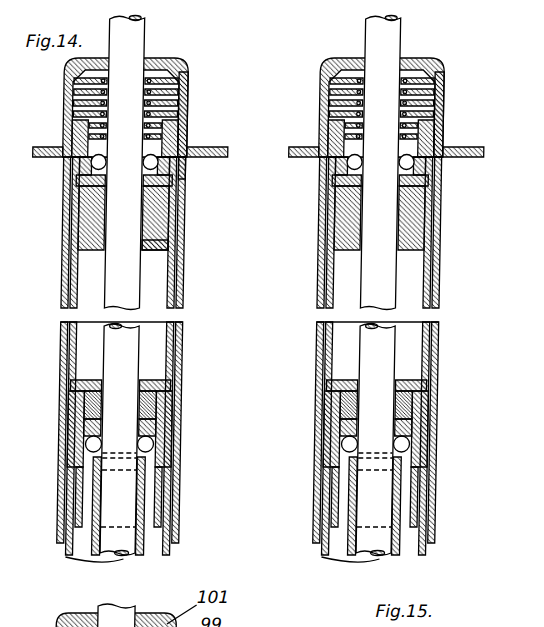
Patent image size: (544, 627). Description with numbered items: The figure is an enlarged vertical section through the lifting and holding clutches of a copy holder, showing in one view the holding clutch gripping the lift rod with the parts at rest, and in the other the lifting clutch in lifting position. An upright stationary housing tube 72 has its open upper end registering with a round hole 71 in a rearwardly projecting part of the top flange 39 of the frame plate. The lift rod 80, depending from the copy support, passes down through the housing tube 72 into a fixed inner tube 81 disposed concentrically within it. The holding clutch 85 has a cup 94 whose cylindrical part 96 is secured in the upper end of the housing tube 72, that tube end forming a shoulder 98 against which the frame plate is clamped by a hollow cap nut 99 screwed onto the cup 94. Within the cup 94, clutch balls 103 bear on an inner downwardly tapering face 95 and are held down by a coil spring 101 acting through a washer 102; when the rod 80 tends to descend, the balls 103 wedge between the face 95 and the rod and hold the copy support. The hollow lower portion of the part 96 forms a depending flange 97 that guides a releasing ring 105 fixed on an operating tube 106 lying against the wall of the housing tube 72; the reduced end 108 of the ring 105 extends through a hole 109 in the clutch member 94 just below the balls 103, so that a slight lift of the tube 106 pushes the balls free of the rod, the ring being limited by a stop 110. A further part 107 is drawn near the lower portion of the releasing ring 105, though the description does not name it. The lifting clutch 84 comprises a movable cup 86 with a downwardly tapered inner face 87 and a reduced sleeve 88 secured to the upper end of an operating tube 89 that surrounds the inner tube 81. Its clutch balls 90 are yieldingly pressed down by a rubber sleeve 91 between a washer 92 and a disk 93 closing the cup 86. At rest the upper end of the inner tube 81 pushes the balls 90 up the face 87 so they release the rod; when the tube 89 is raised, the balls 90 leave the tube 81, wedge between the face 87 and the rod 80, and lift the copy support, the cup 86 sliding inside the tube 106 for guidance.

In FIG. 14, the top flange 39 is at (118, 139).
In FIG. 15, the top flange 39 is at (377, 134).
In FIG. 14, the round hole 71 is at (62, 128).
In FIG. 15, the round hole 71 is at (313, 120).
In FIG. 14, the housing tube 72 is at (64, 463).
In FIG. 15, the housing tube 72 is at (455, 232).
In FIG. 14, the lift rod 80 is at (122, 286).
In FIG. 15, the lift rod 80 is at (378, 286).
In FIG. 14, the inner tube 81 is at (125, 567).
In FIG. 15, the inner tube 81 is at (348, 589).
In FIG. 14, the lifting clutch 84 is at (57, 453).
In FIG. 14, the holding clutch 85 is at (56, 218).
In FIG. 14, the cup 86 is at (177, 420).
In FIG. 15, the cup 86 is at (432, 429).
In FIG. 14, the tapered inner face 87 is at (57, 430).
In FIG. 15, the tapered inner face 87 is at (314, 431).
In FIG. 14, the reduced sleeve 88 is at (90, 501).
In FIG. 15, the reduced sleeve 88 is at (345, 497).
In FIG. 14, the operating member 89 is at (81, 517).
In FIG. 15, the operating member 89 is at (335, 520).
In FIG. 14, the clutch balls 90 is at (34, 443).
In FIG. 15, the clutch balls 90 is at (350, 438).
In FIG. 14, the rubber sleeve 91 is at (180, 399).
In FIG. 15, the rubber sleeve 91 is at (342, 386).
In FIG. 14, the washer 92 is at (61, 405).
In FIG. 15, the washer 92 is at (433, 421).
In FIG. 14, the disk 93 is at (96, 376).
In FIG. 15, the disk 93 is at (410, 387).
In FIG. 14, the cup 94 is at (198, 138).
In FIG. 15, the cup 94 is at (447, 170).
In FIG. 14, the tapering face 95 is at (207, 114).
In FIG. 15, the tapering face 95 is at (454, 114).
In FIG. 14, the cylindrical part 96 is at (210, 232).
In FIG. 15, the cylindrical part 96 is at (452, 232).
In FIG. 14, the depending flange 97 is at (186, 194).
In FIG. 15, the depending flange 97 is at (438, 220).
In FIG. 14, the shoulder 98 is at (210, 169).
In FIG. 14, the cap nut 99 is at (64, 72).
In FIG. 15, the cap nut 99 is at (400, 107).
In FIG. 14, the coil spring 101 is at (146, 85).
In FIG. 15, the coil spring 101 is at (398, 88).
In FIG. 15, the washer 102 is at (453, 138).
In FIG. 14, the clutch balls 103 is at (79, 166).
In FIG. 15, the clutch balls 103 is at (347, 169).
In FIG. 14, the releasing ring 105 is at (189, 218).
In FIG. 15, the releasing ring 105 is at (316, 241).
In FIG. 14, the releasing tube 106 is at (101, 232).
In FIG. 15, the releasing tube 106 is at (302, 240).
In FIG. 14, the block bottom 107 is at (191, 253).
In FIG. 14, the reduced end 108 is at (54, 232).
In FIG. 15, the reduced end 108 is at (445, 201).
In FIG. 14, the hole 109 is at (52, 186).
In FIG. 15, the stop 110 is at (318, 183).